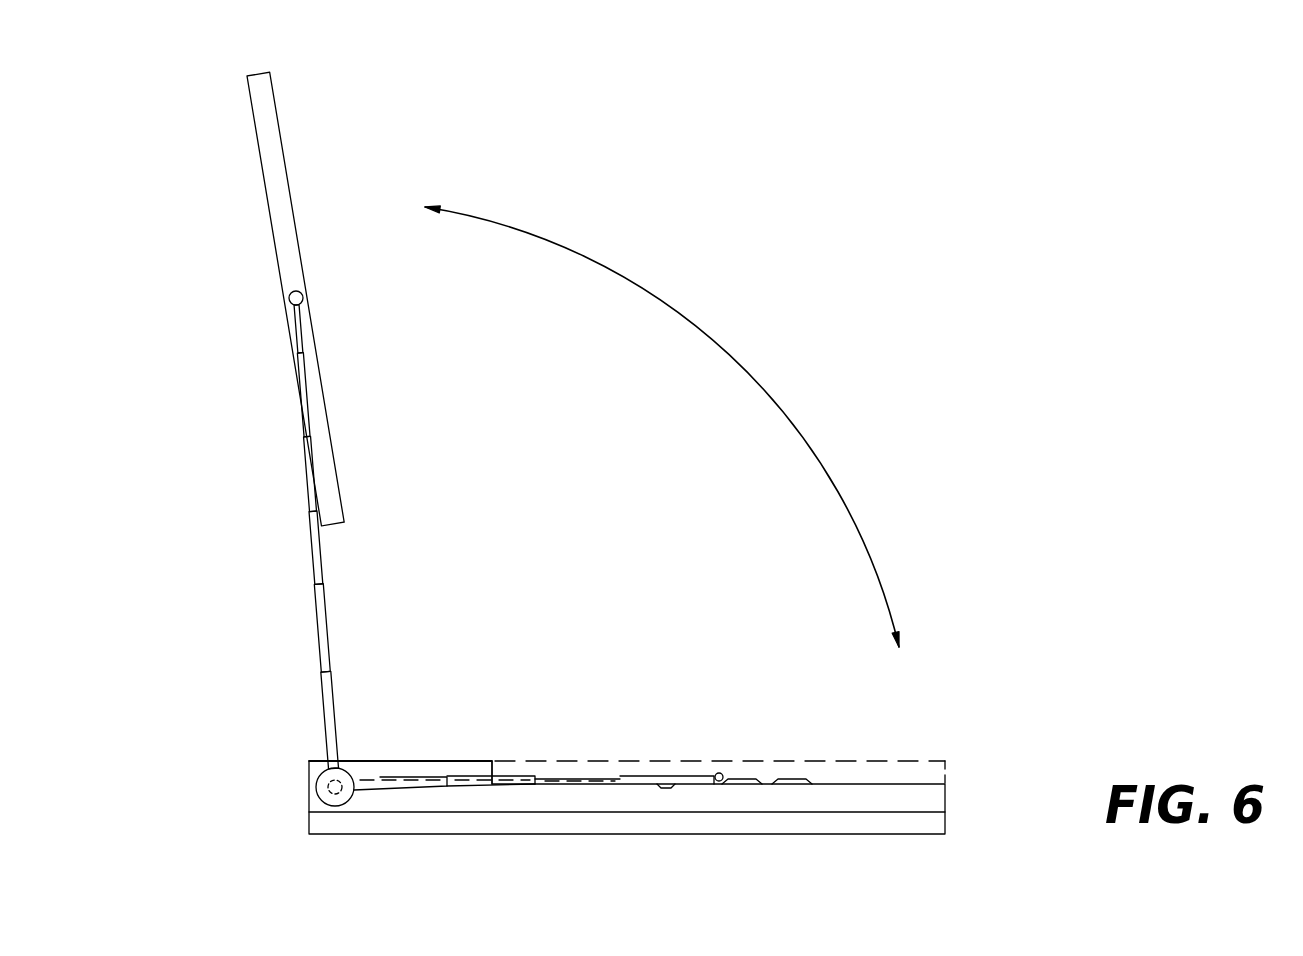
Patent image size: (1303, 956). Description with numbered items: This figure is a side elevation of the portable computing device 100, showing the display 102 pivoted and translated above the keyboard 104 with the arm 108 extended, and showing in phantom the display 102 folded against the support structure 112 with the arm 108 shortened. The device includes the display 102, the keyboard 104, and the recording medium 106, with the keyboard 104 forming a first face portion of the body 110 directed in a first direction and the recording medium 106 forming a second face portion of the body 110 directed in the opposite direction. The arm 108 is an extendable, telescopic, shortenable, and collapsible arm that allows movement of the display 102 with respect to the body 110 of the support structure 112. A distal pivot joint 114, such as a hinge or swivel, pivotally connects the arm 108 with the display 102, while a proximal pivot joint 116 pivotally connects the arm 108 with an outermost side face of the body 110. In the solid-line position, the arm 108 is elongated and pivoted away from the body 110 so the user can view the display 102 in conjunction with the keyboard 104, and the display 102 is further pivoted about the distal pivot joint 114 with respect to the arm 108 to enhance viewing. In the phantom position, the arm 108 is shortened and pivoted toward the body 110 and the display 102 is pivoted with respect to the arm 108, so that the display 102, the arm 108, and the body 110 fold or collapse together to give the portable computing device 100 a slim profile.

The portable computing device 100 is at (845, 137).
The display 102 is at (282, 138).
The keyboard 104 is at (791, 779).
The recording medium 106 is at (725, 835).
The arm 108 is at (314, 567).
The body 110 is at (389, 800).
The support structure 112 is at (386, 744).
The distal pivot joint 114 is at (290, 299).
The proximal pivot joint 116 is at (317, 788).